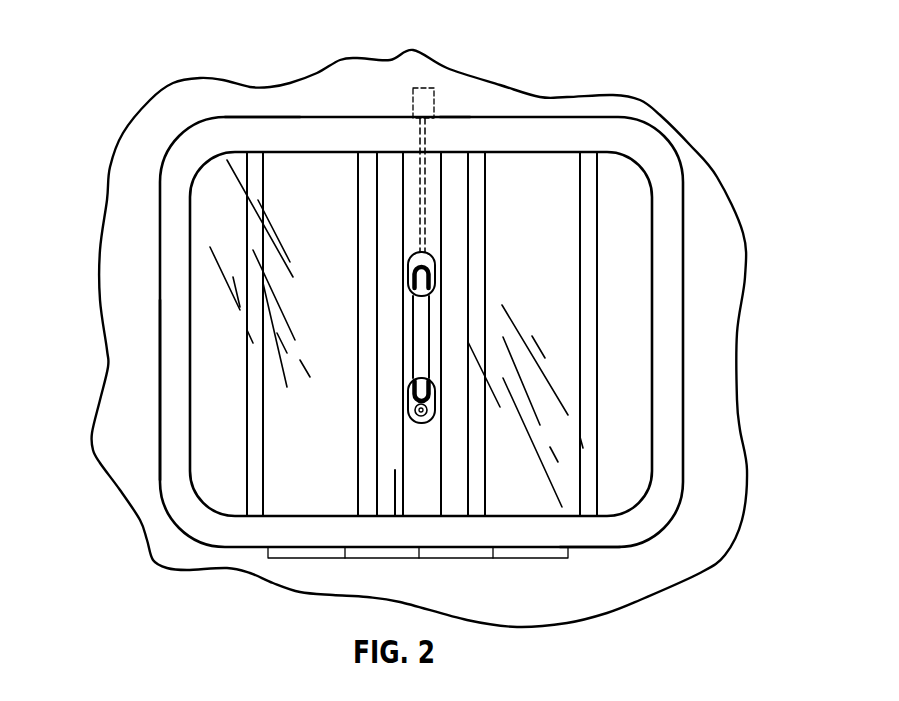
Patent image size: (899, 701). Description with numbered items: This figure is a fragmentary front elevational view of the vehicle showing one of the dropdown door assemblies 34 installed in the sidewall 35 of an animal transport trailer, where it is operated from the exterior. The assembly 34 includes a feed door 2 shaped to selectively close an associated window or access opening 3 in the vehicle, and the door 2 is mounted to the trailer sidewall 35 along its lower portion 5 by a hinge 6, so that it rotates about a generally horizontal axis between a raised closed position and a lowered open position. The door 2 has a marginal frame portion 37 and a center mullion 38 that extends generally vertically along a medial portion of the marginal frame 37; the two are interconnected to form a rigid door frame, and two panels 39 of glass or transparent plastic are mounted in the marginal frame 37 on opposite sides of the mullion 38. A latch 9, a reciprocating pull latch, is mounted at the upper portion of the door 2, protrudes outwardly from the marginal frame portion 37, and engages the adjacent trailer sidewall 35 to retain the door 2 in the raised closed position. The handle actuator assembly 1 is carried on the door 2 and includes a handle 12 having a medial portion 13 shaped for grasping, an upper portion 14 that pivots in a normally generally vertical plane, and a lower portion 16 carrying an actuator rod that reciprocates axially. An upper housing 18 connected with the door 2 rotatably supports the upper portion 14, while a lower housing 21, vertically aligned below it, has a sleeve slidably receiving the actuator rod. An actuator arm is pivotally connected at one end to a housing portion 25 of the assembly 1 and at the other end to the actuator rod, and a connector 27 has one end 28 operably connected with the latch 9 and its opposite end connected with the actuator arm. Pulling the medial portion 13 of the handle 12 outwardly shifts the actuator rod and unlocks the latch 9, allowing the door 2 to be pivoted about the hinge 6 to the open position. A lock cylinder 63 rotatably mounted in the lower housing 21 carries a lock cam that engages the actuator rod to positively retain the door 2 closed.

The handle actuator assembly 1 is at (428, 344).
The feed door 2 is at (163, 502).
The access opening 3 is at (686, 190).
The lower portion 5 is at (617, 538).
The hinge 6 is at (453, 558).
The latch 9 is at (422, 85).
The handle 12 is at (430, 355).
The medial portion 13 is at (418, 318).
The upper portion 14 is at (420, 290).
The lower portion 16 is at (420, 380).
The upper housing 18 is at (428, 255).
The lower housing 21 is at (430, 408).
The housing portion 25 is at (397, 480).
The connector 27 is at (420, 172).
The end 28 is at (462, 113).
The dropdown door assembly 34 is at (200, 122).
The sidewall 35 is at (718, 368).
The marginal frame portion 37 is at (172, 302).
The center mullion 38 is at (430, 207).
The panels 39 is at (205, 218).
The lock cylinder 63 is at (412, 415).